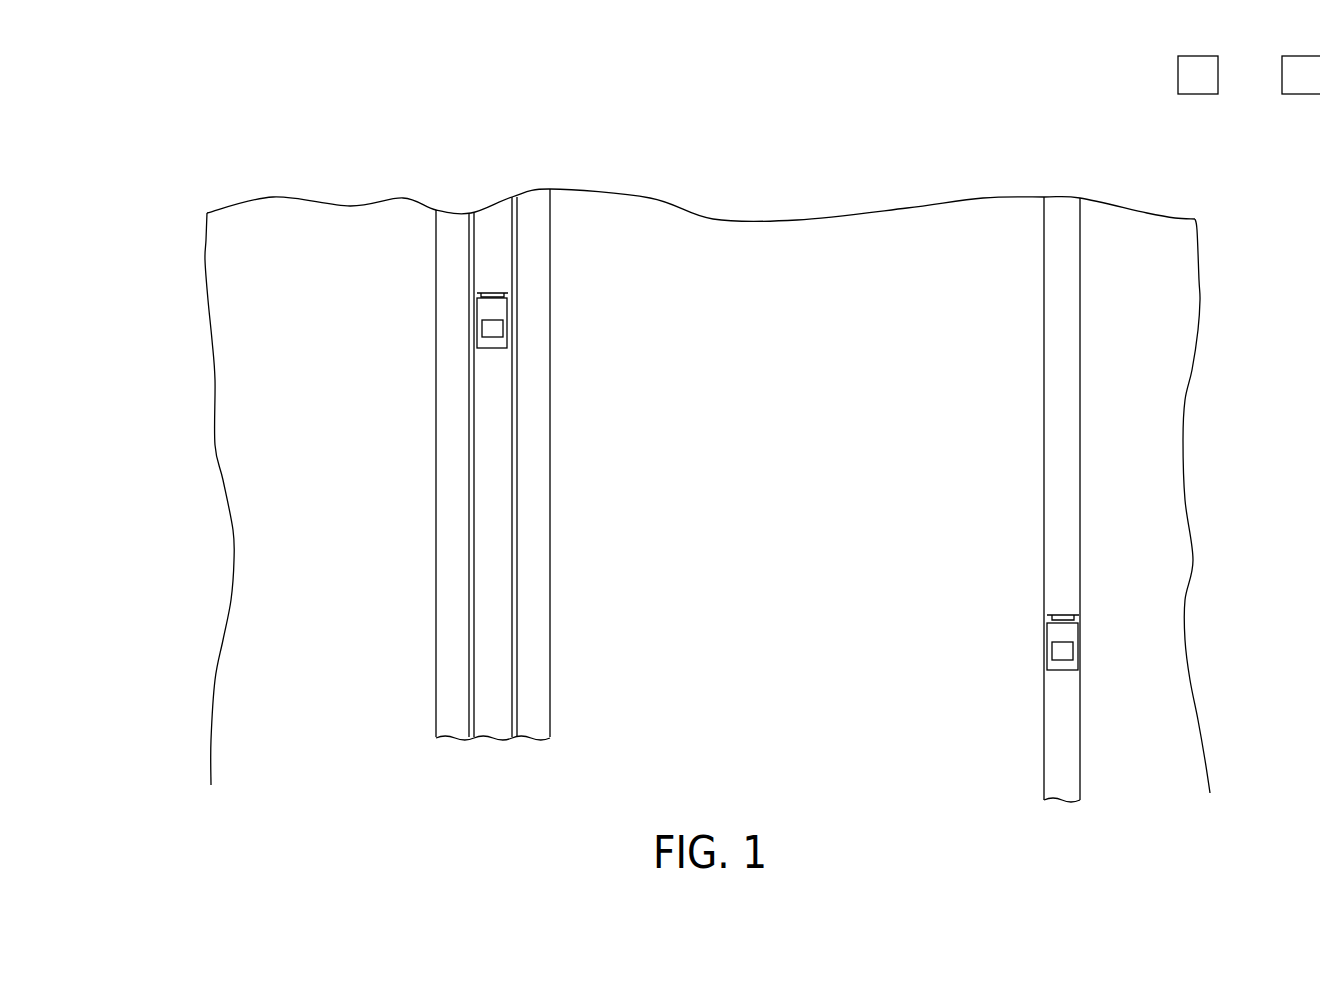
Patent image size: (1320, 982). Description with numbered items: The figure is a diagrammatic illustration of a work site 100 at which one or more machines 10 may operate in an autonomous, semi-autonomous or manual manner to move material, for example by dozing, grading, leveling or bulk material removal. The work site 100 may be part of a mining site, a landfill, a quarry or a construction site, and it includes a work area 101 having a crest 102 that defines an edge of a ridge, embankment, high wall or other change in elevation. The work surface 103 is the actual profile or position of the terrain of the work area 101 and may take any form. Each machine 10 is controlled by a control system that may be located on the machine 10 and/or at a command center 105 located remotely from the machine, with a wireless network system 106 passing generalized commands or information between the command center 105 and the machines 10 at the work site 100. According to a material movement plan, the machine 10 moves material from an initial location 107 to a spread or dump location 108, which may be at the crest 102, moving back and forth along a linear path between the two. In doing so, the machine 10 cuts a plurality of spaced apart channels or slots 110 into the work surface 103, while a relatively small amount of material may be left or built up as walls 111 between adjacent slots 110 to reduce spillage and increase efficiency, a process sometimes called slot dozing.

The work site 100 is at (186, 154).
The work area 101 is at (240, 367).
The crest 102 is at (377, 200).
The work surface 103 is at (303, 255).
The command center 105 is at (1190, 73).
The wireless network system 106 is at (1300, 75).
The initial location 107 is at (396, 695).
The dump location 108 is at (559, 145).
The slots 110 is at (450, 498).
The walls 111 is at (470, 578).
The machine 10 is at (482, 343).